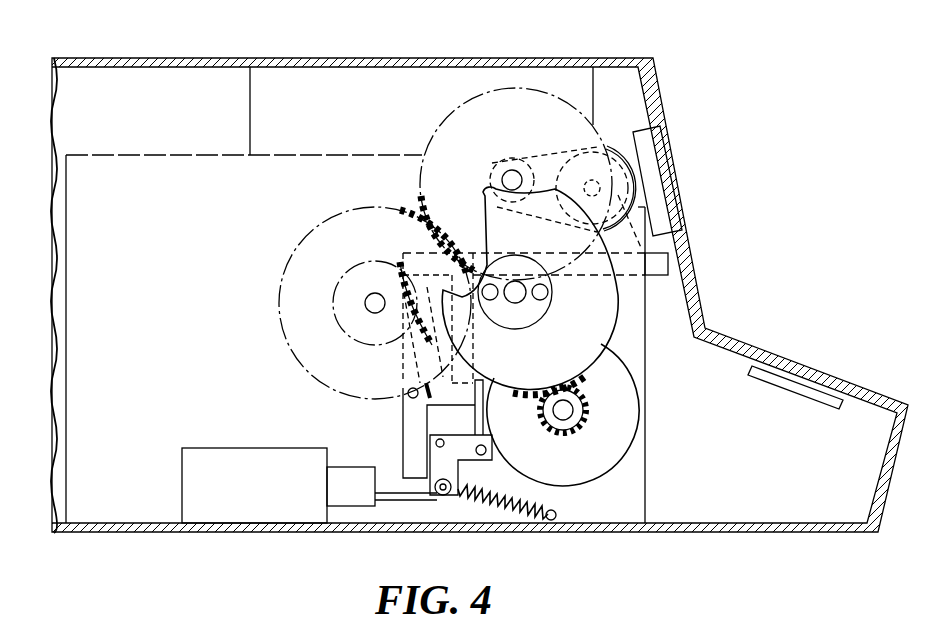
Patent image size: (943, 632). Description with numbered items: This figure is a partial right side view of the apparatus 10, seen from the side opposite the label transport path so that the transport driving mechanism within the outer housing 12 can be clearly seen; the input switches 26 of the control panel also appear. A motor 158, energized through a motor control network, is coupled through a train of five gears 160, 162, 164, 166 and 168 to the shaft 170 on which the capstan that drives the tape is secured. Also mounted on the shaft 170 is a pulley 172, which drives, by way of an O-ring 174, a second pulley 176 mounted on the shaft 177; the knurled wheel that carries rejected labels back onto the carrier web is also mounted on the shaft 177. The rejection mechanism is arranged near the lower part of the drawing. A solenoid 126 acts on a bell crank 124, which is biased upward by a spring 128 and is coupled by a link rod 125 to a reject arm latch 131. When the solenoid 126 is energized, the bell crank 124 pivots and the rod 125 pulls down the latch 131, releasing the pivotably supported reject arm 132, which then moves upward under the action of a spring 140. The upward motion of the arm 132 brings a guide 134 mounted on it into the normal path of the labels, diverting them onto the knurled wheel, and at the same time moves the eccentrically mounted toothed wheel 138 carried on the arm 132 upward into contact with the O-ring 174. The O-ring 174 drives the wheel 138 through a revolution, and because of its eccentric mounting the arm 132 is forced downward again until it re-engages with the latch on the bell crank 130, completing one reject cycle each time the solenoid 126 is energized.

The apparatus 10 is at (236, 52).
The outer housing 12 is at (446, 55).
The input switches 26 is at (814, 402).
The bell crank 124 is at (485, 465).
The link rod 125 is at (475, 415).
The solenoid 126 is at (228, 455).
The spring 128 is at (504, 516).
The bell crank 130 is at (403, 428).
The reject arm latch 131 is at (478, 372).
The reject arm 132 is at (473, 343).
The guide 134 is at (635, 215).
The eccentrically mounted toothed wheel 138 is at (637, 290).
The spring 140 is at (418, 362).
The motor 158 is at (627, 421).
The gear 160 is at (575, 430).
The gear 162 is at (608, 343).
The gear 164 is at (356, 263).
The gear 166 is at (302, 243).
The gear 168 is at (444, 122).
The capstan shaft 170 is at (511, 176).
The pulley 172 is at (496, 165).
The O-ring 174 is at (550, 150).
The pulley 176 is at (617, 157).
The shaft 177 is at (600, 187).